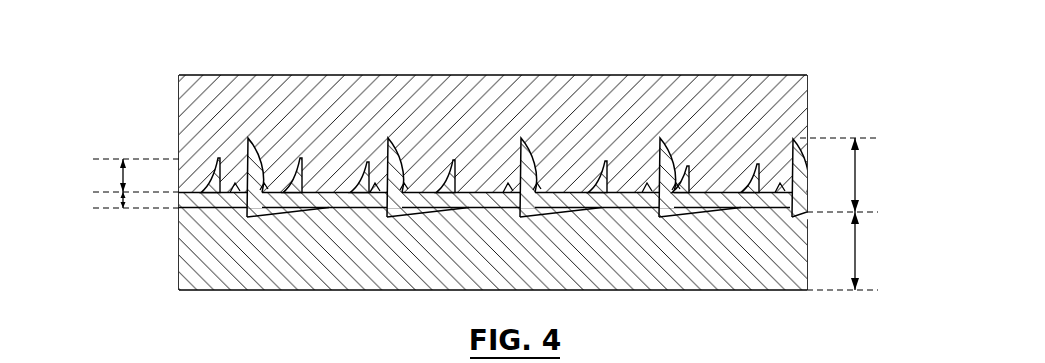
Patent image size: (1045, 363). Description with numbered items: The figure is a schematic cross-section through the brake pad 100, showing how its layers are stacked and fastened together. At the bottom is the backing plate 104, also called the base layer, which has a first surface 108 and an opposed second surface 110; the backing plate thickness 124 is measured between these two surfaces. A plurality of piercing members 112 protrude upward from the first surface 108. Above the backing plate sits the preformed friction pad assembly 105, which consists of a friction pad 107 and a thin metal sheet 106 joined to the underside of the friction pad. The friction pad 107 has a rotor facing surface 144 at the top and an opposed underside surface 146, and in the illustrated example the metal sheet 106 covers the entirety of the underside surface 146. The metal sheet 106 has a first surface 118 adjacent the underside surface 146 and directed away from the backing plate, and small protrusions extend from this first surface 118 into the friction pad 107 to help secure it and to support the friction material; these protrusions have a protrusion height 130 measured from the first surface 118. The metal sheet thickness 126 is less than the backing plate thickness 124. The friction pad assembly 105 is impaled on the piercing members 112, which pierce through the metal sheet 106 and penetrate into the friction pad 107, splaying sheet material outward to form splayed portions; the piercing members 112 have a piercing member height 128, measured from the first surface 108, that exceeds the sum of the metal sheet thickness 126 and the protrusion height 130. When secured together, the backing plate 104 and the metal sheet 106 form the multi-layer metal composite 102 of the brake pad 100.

The brake pad 100 is at (854, 46).
The multi-layer metal composite 102 is at (419, 242).
The brake pad backing plate 104 is at (193, 258).
The friction pad assembly 105 is at (499, 134).
The metal sheet 106 is at (207, 202).
The friction pad 107 is at (193, 92).
The backing plate first surface 108 is at (720, 213).
The backing plate second surface 110 is at (637, 290).
The piercing members 112 is at (403, 192).
The metal sheet first surface 118 is at (475, 191).
The backing plate thickness 124 is at (857, 252).
The metal sheet thickness 126 is at (120, 197).
The piercing member height 128 is at (857, 176).
The protrusion height 130 is at (120, 173).
The rotor facing surface 144 is at (703, 75).
The underside surface 146 is at (700, 193).